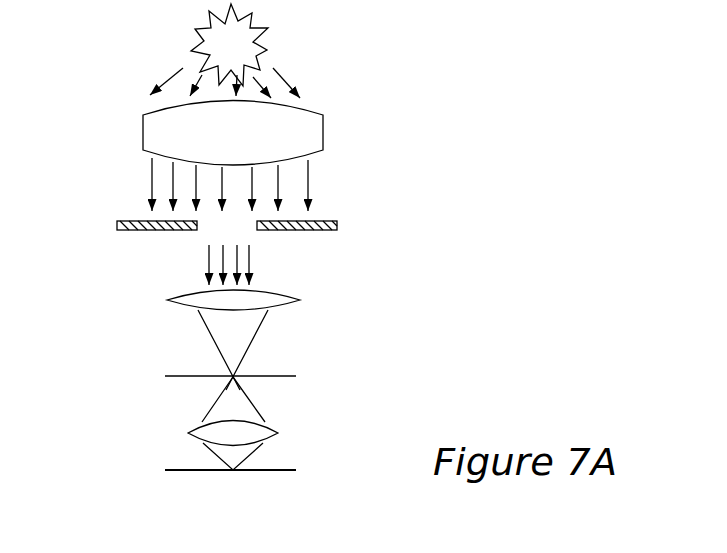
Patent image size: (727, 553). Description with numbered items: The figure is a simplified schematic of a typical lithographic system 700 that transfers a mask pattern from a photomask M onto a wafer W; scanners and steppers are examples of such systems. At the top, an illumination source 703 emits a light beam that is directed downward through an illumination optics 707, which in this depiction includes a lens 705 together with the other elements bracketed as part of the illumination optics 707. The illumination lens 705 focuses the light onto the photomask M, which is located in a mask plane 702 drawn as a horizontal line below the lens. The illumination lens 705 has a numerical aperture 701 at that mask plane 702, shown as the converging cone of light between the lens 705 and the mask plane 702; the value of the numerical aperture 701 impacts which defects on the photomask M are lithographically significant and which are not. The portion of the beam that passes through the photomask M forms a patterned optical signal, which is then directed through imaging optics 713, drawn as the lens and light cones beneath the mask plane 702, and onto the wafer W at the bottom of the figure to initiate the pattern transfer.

The lithographic system 700 is at (350, 38).
The illumination source 703 is at (196, 41).
The illumination optics 707 is at (93, 112).
The illumination lens 705 is at (298, 300).
The numerical aperture 701 is at (257, 333).
The mask plane 702 is at (156, 376).
The imaging optics 713 is at (130, 377).
The photomask M is at (278, 376).
The wafer W is at (190, 471).